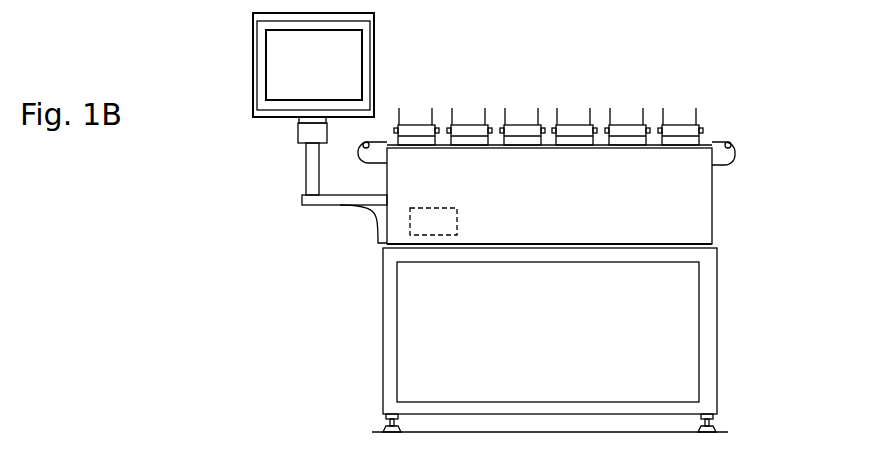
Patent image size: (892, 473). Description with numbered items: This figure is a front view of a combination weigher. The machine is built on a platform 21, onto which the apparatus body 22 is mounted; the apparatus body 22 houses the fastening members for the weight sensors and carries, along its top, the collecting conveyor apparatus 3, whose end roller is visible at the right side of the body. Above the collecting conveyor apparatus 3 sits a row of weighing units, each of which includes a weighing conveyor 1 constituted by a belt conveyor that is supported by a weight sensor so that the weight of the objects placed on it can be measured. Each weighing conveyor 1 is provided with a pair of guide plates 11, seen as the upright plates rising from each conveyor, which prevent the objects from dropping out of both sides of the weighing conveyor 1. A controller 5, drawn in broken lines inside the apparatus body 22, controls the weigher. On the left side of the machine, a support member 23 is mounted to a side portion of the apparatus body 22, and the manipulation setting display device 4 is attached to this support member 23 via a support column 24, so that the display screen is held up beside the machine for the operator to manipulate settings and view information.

The weighing conveyor 1 is at (682, 125).
The collecting conveyor apparatus 3 is at (732, 142).
The manipulation setting display device 4 is at (253, 69).
The controller 5 is at (410, 221).
The guide plate 11 is at (662, 124).
The platform 21 is at (717, 340).
The apparatus body 22 is at (712, 215).
The support member 23 is at (337, 206).
The support column 24 is at (306, 173).